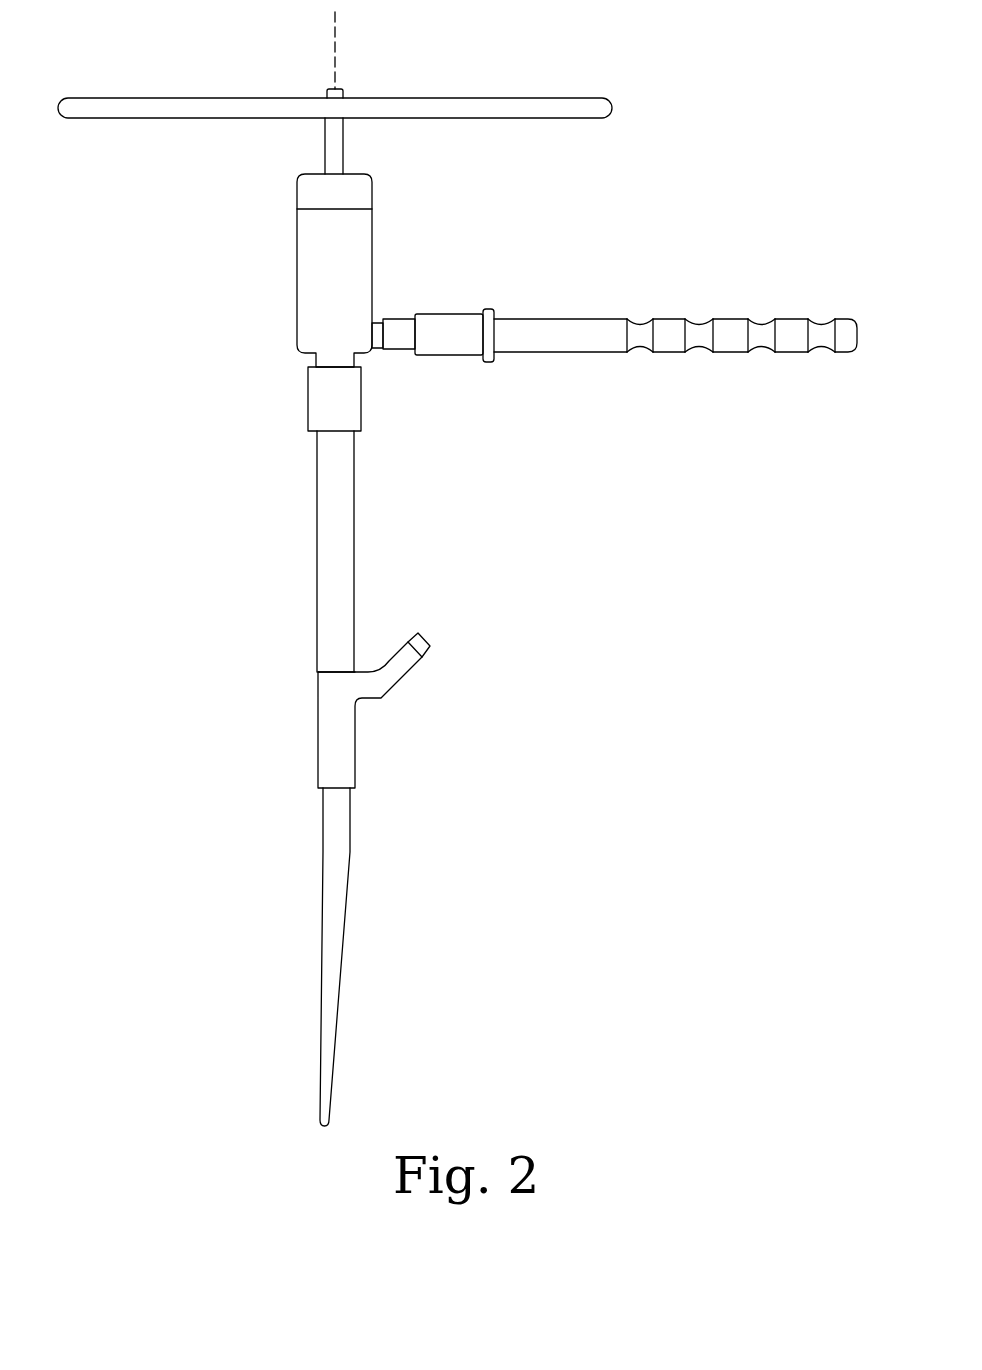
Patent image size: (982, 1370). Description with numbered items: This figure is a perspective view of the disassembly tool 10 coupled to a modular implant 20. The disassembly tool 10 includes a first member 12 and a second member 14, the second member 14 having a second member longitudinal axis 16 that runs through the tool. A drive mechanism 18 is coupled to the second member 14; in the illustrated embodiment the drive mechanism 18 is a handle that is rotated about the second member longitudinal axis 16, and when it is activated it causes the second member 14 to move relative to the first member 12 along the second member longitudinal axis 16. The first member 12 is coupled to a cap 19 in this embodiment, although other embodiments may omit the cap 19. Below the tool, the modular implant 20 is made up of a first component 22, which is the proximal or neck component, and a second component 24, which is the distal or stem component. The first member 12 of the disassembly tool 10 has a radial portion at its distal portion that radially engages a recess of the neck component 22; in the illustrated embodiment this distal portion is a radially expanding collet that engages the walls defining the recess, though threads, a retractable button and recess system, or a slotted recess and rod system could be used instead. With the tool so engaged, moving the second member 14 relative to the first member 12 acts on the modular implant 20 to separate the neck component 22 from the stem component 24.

The disassembly tool 10 is at (648, 228).
The first member 12 is at (379, 636).
The second member 14 is at (372, 147).
The second member longitudinal axis 16 is at (336, 52).
The drive mechanism 18 is at (514, 90).
The cap 19 is at (373, 196).
The modular implant 20 is at (398, 765).
The first component 22 is at (400, 680).
The second component 24 is at (345, 920).